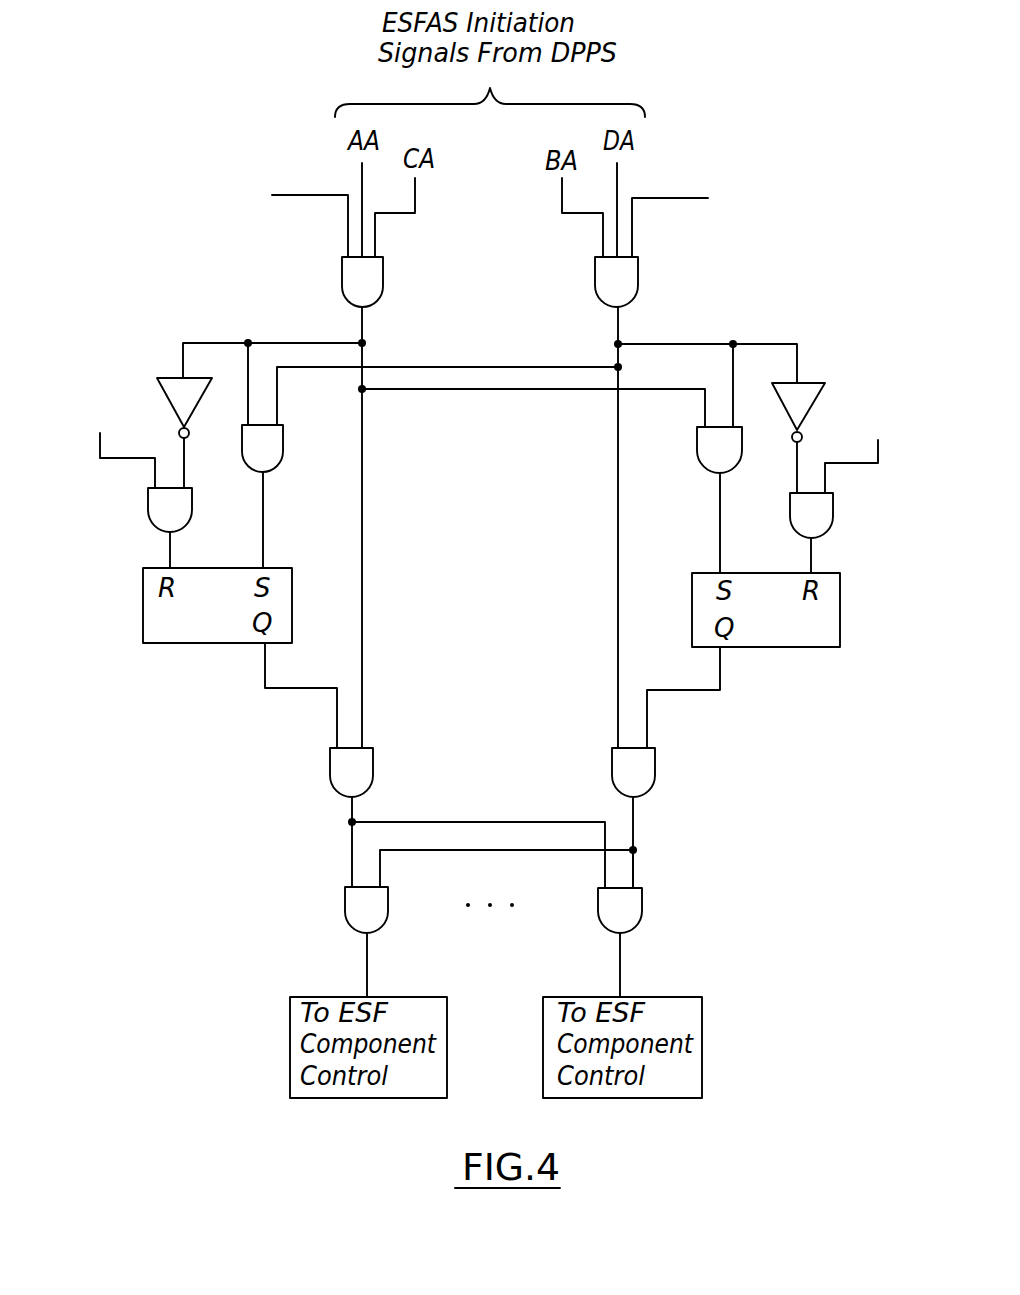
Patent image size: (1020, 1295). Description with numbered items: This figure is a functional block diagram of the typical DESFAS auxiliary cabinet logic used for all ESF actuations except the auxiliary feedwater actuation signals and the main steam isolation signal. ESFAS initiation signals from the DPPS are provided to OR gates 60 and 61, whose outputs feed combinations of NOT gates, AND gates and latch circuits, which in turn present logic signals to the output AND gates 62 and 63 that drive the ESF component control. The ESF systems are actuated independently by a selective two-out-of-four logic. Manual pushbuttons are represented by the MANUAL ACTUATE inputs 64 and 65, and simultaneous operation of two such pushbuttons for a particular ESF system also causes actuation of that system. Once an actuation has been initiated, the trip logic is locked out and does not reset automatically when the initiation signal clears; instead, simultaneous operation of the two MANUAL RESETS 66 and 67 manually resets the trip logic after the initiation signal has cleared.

The OR gate 60 is at (383, 277).
The OR gate 61 is at (595, 271).
The output AND gate 62 is at (345, 900).
The output AND gate 63 is at (642, 905).
The MANUAL ACTUATE input 64 is at (138, 192).
The MANUAL ACTUATE input 65 is at (818, 194).
The MANUAL RESET 66 is at (48, 405).
The MANUAL RESET 67 is at (928, 428).